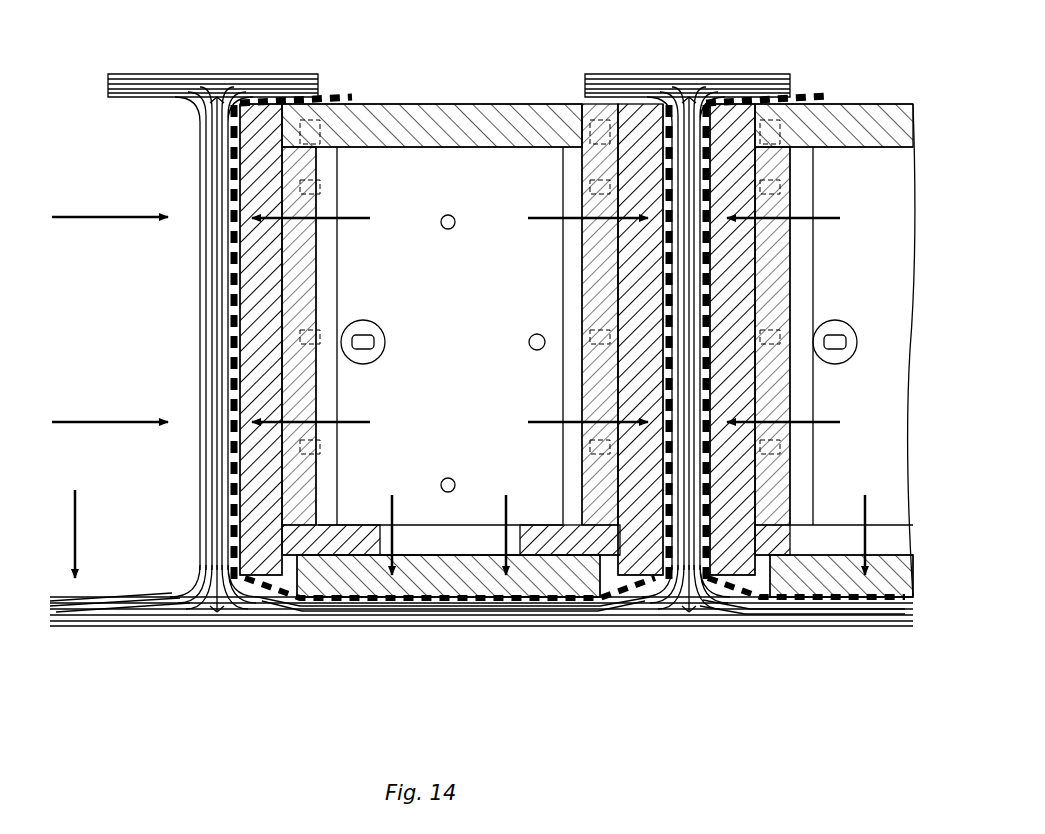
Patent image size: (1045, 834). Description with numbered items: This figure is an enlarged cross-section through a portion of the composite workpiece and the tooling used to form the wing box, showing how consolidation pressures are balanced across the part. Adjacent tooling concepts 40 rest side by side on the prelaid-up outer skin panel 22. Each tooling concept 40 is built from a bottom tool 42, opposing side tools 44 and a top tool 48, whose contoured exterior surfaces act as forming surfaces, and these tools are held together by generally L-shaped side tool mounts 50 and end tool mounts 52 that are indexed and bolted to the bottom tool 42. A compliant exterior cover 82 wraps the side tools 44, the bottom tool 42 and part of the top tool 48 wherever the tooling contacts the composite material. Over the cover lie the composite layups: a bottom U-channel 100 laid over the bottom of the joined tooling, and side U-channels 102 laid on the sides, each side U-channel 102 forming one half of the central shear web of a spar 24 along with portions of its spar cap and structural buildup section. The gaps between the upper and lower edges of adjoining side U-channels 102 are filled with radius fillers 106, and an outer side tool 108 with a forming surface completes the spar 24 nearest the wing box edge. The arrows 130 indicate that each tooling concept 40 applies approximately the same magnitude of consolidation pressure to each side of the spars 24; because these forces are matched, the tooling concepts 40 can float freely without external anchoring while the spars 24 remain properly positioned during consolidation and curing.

The outer skin panel 22 is at (125, 636).
The spar 24 is at (184, 314).
The tooling concept 40 is at (522, 52).
The bottom tool 42 is at (380, 585).
The side tool 44 is at (258, 285).
The top tool 48 is at (428, 122).
The side tool mount 50 is at (300, 258).
The end tool mount 52 is at (474, 319).
The compliant exterior cover 82 is at (348, 100).
The bottom U-channel 100 is at (195, 560).
The side U-channel 102 is at (150, 98).
The radius filler 106 is at (214, 93).
The side tool 108 is at (320, 75).
The arrows 130 is at (112, 215).